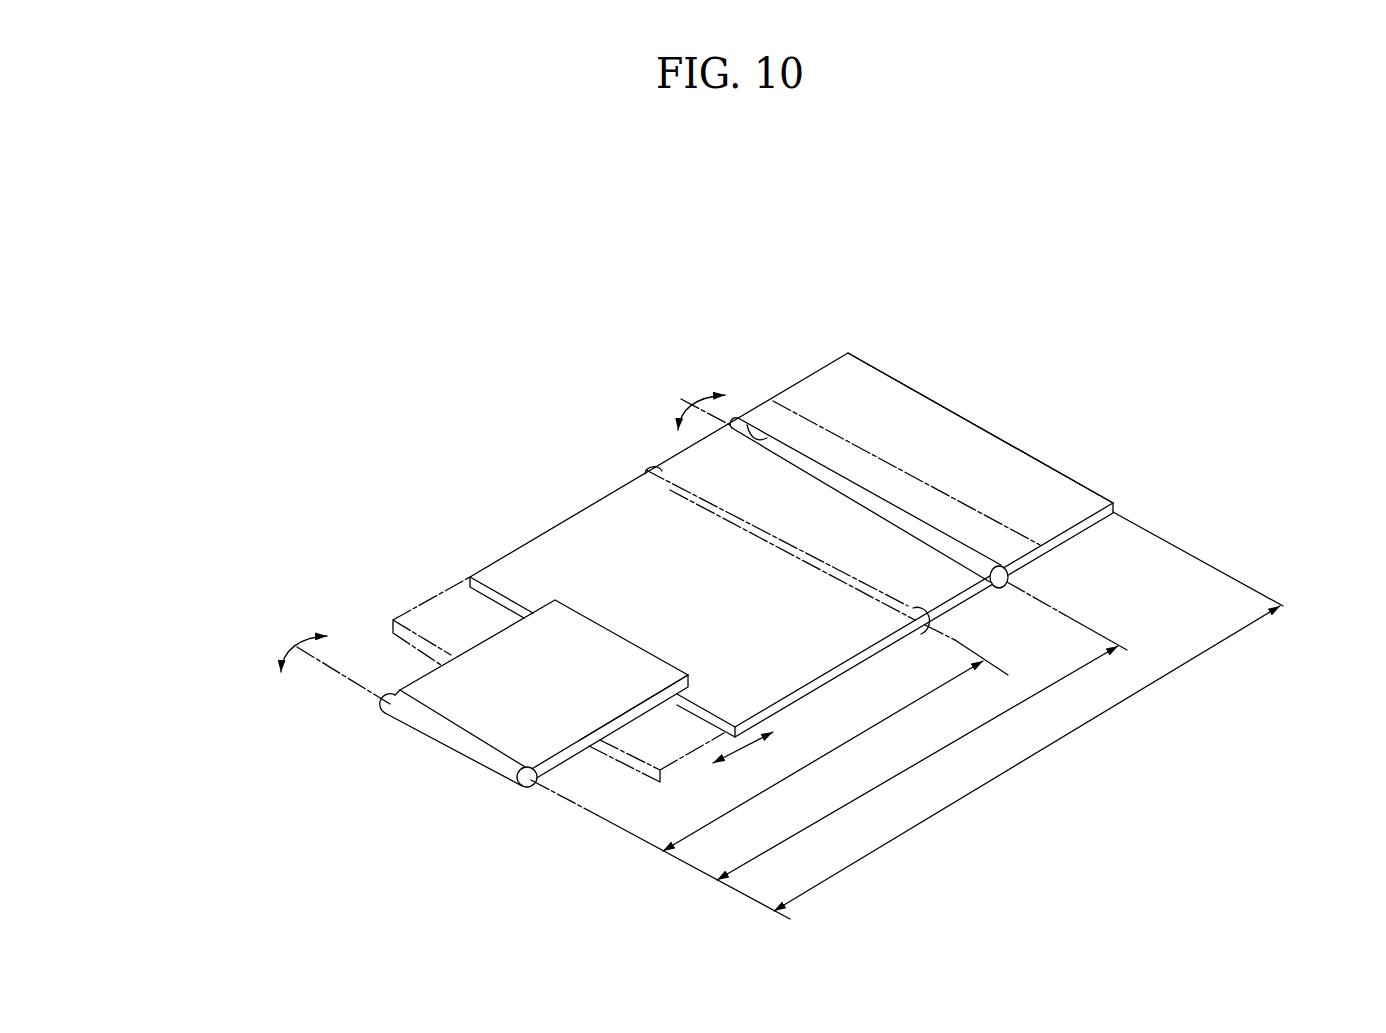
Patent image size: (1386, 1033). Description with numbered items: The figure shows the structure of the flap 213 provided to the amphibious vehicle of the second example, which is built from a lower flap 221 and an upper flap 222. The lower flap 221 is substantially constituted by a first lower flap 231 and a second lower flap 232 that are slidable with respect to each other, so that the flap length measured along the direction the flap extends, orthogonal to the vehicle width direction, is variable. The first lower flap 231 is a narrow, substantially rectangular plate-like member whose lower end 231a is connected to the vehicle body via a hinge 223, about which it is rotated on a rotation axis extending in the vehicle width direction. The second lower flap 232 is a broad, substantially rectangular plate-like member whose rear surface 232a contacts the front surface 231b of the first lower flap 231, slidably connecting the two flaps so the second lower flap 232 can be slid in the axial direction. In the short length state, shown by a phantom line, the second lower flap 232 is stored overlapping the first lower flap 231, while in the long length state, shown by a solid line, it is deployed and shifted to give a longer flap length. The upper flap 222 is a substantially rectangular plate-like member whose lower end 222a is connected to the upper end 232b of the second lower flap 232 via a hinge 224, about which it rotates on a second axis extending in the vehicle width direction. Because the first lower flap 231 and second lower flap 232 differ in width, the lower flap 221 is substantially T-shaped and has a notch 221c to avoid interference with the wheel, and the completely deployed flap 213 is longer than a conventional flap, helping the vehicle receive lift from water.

The flap 213 is at (935, 256).
The lower flap 221 is at (556, 408).
The notch 221c is at (462, 595).
The upper flap 222 is at (815, 370).
The lower end of the upper flap 222a is at (738, 418).
The hinge 223 is at (445, 740).
The hinge 224 is at (857, 490).
The first lower flap 231 is at (502, 630).
The lower end of the first lower flap 231a is at (403, 711).
The front surface of the first lower flap 231b is at (570, 760).
The second lower flap 232 is at (547, 528).
The rear surface of the second lower flap 232a is at (637, 530).
The upper end of the second lower flap 232b is at (797, 465).